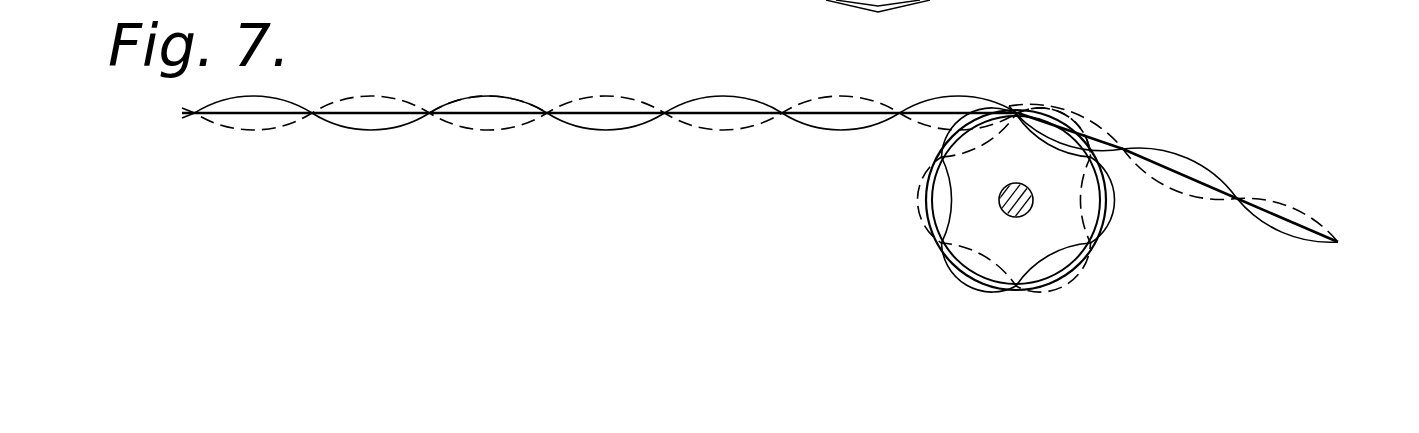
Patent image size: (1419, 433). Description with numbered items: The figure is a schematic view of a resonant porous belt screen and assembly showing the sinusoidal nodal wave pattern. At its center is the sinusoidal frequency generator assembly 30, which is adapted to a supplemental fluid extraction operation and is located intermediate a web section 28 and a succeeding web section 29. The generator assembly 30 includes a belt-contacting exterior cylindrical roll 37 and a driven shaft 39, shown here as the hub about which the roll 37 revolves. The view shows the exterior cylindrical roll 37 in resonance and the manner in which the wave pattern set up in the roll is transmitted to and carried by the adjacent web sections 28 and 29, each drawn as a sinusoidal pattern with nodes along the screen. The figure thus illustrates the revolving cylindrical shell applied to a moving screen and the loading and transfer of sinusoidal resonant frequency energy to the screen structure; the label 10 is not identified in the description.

The twisted strand 10 is at (601, 180).
The web section 28 is at (1173, 202).
The succeeding web section 29 is at (489, 165).
The sinusoidal frequency generator assembly 30 is at (1130, 101).
The roll 37 is at (1037, 200).
The driven shaft 39 is at (953, 211).